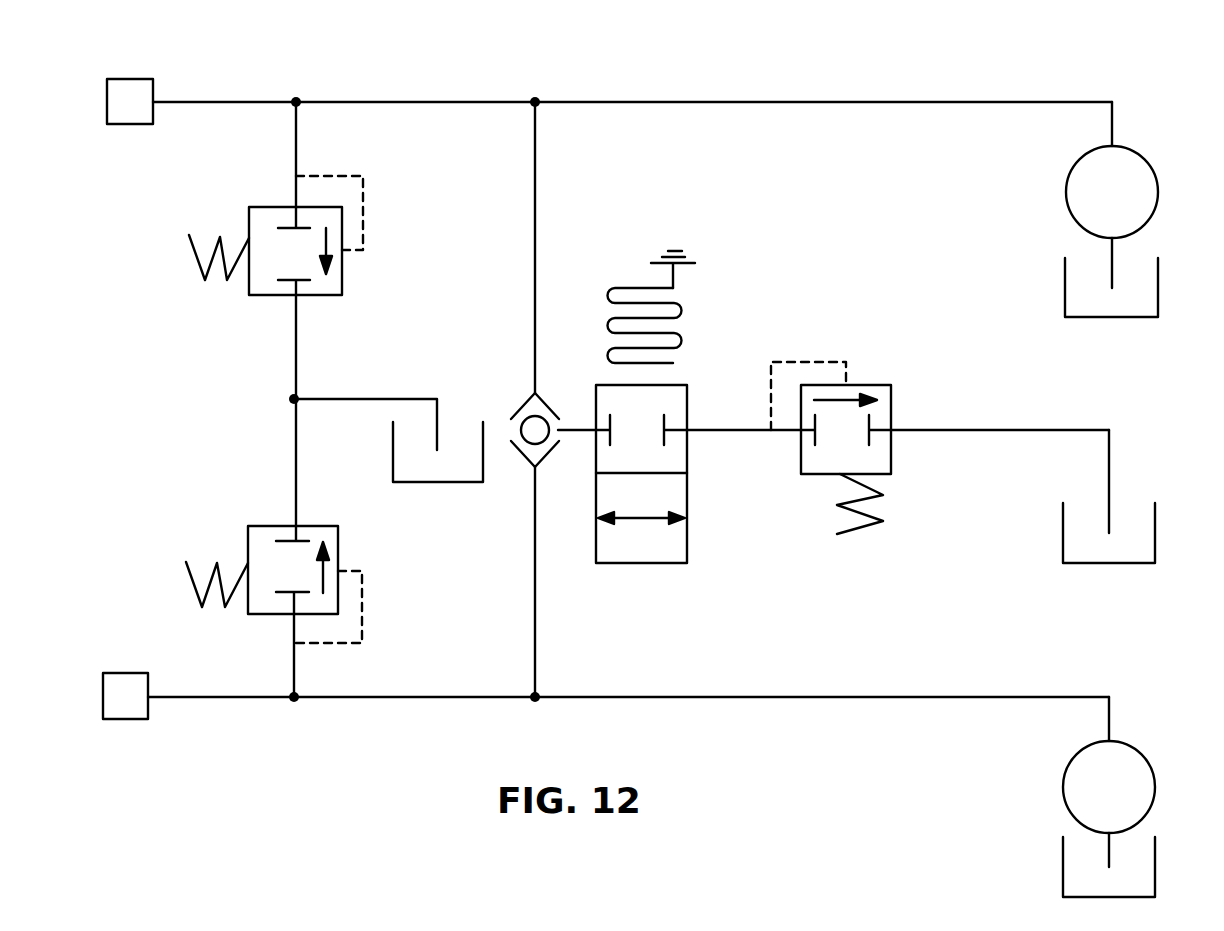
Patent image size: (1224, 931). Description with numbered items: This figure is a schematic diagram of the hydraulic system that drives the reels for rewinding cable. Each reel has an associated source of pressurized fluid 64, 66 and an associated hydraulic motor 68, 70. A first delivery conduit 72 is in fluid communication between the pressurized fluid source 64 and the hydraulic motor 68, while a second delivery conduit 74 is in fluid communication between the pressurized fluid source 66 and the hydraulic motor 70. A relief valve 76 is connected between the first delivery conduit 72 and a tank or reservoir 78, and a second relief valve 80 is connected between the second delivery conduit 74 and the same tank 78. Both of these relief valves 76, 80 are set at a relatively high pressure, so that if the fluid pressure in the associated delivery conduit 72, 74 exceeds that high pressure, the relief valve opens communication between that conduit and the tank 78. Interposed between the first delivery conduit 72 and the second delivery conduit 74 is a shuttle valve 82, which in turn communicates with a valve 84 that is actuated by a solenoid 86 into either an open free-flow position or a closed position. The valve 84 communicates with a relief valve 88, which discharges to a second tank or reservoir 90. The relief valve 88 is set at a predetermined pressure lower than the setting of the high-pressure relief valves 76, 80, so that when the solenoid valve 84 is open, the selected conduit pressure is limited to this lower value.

The source of pressurized fluid 64 is at (125, 79).
The source of pressurized fluid 66 is at (121, 673).
The hydraulic motor 68 is at (1092, 207).
The hydraulic motor 70 is at (1089, 801).
The first delivery conduit 72 is at (893, 103).
The second delivery conduit 74 is at (752, 697).
The relief valve 76 is at (342, 258).
The tank 78 is at (449, 482).
The second relief valve 80 is at (323, 526).
The shuttle valve 82 is at (548, 406).
The valve 84 is at (652, 563).
The solenoid 86 is at (628, 284).
The relief valve 88 is at (881, 385).
The tank 90 is at (1157, 522).